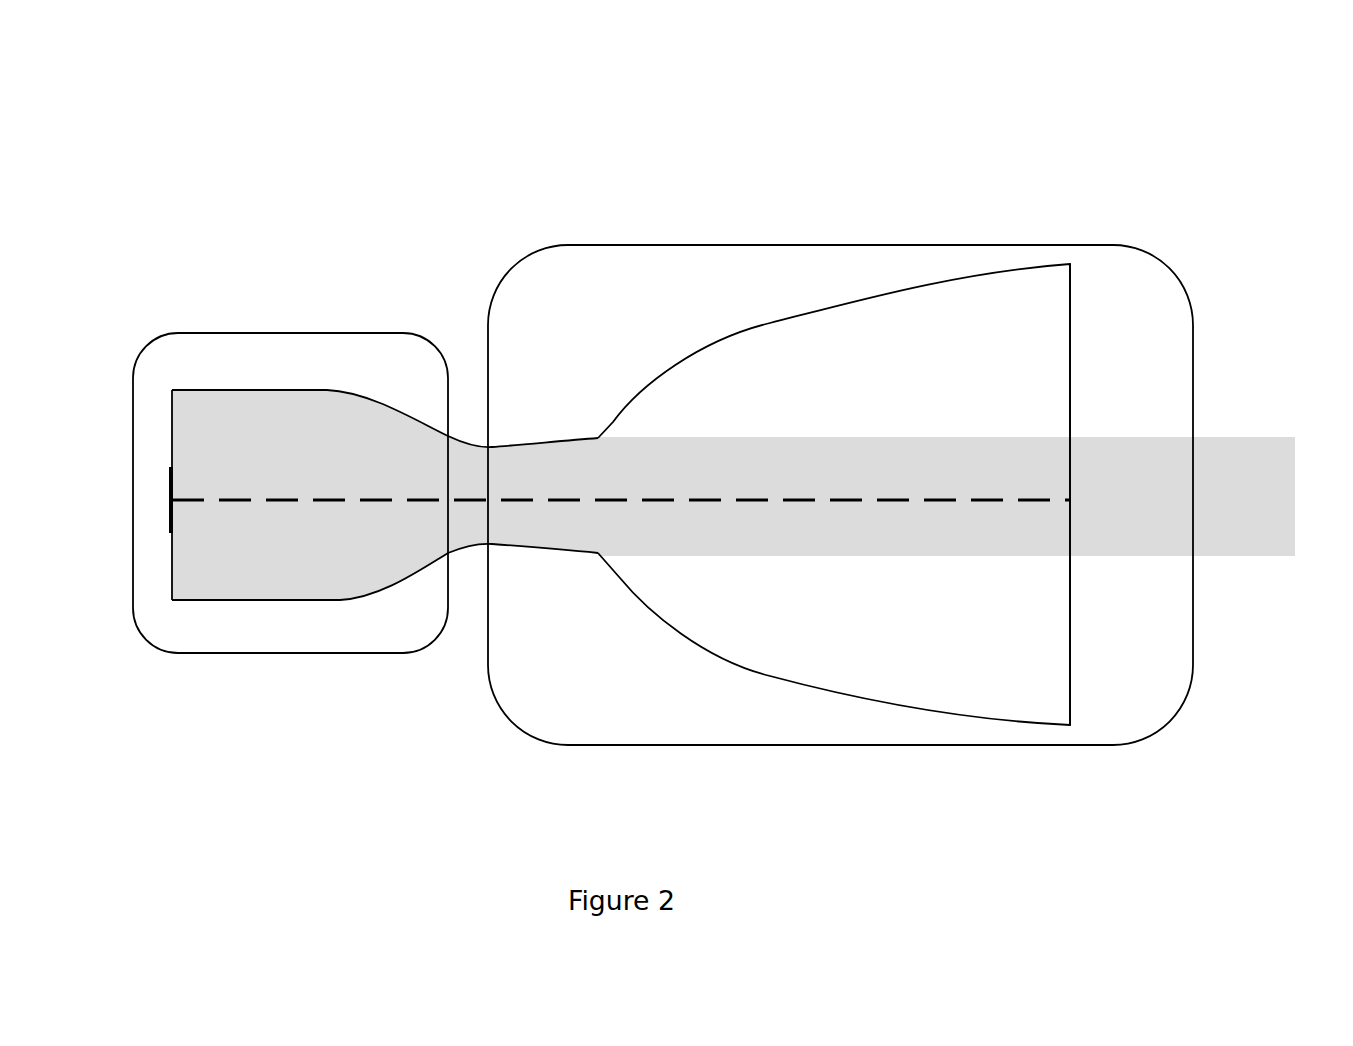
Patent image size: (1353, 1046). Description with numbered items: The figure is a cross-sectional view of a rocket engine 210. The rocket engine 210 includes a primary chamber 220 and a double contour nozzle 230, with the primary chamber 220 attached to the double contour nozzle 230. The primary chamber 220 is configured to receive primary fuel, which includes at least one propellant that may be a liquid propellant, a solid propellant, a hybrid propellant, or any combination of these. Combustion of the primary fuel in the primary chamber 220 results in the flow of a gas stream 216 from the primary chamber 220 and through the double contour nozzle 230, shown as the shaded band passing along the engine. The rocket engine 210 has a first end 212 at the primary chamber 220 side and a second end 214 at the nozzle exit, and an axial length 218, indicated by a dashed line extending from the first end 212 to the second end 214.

The rocket engine 210 is at (214, 160).
The first end 212 is at (173, 500).
The second end 214 is at (1070, 500).
The gas stream 216 is at (1245, 430).
The axial length 218 is at (572, 502).
The primary chamber 220 is at (278, 654).
The double contour nozzle 230 is at (765, 246).